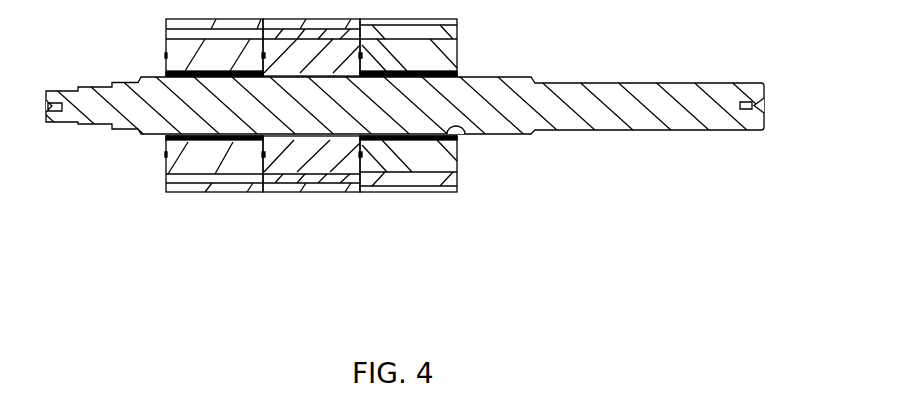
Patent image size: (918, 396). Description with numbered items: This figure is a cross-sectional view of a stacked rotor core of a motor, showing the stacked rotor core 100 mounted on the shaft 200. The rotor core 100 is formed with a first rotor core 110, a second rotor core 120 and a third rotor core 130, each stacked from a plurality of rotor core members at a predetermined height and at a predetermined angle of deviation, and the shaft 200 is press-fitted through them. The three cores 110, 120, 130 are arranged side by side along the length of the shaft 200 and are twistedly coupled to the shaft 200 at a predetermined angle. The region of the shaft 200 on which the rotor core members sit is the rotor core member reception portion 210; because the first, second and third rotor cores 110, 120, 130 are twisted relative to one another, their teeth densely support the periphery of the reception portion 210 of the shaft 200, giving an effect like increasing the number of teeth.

The stacked rotor core 100 is at (311, 151).
The first rotor core 110 is at (222, 168).
The second rotor core 120 is at (312, 168).
The third rotor core 130 is at (408, 130).
The shaft 200 is at (403, 128).
The rotor core member reception portion 210 is at (465, 135).